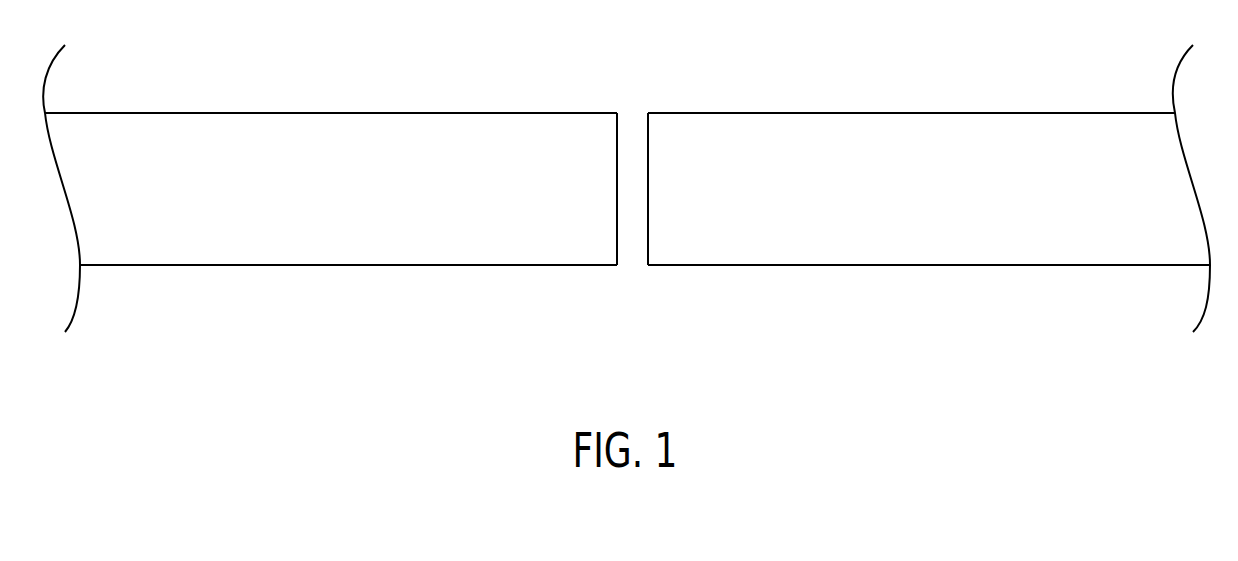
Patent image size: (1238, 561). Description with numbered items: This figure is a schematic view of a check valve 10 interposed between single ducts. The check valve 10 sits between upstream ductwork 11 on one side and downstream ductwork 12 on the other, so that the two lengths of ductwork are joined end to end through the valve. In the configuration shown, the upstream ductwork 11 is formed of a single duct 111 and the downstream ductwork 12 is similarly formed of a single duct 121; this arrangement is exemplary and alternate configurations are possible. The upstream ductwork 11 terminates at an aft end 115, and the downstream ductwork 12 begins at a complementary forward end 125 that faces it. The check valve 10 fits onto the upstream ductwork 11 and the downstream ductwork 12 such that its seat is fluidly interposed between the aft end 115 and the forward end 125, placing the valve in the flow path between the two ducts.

The check valve 10 is at (633, 227).
The upstream ductwork 11 is at (929, 193).
The downstream ductwork 12 is at (330, 193).
The single duct 111 is at (908, 112).
The single duct 121 is at (332, 112).
The aft end 115 is at (664, 228).
The forward end 125 is at (601, 228).